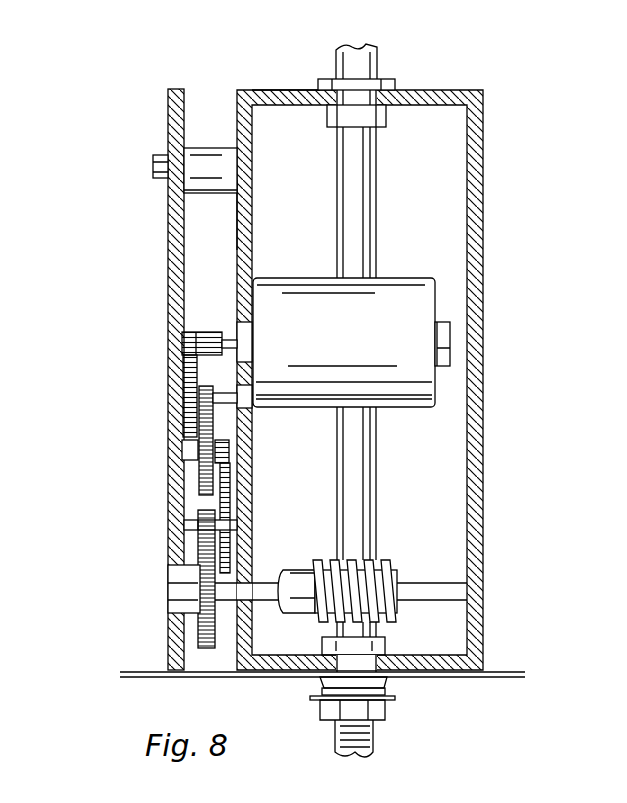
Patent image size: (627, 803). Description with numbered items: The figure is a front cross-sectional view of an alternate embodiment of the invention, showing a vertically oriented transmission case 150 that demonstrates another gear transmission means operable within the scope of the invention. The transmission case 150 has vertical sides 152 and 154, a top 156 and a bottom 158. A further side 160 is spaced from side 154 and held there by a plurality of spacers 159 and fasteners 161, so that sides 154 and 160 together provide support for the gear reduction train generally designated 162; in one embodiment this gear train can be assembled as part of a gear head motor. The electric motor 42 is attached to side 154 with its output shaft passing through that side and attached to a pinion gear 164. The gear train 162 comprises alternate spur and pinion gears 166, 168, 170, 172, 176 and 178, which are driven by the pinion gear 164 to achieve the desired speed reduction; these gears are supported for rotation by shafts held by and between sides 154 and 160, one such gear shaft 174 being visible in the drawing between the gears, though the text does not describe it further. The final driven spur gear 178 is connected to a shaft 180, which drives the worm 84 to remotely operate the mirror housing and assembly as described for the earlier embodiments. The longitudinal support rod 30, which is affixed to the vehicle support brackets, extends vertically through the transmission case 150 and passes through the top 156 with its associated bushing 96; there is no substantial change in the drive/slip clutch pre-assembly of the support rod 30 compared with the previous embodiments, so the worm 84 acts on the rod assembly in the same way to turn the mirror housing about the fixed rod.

The vertically oriented transmission case 150 is at (505, 199).
The vertical side 152 is at (484, 259).
The vertical side 154 is at (247, 215).
The top 156 is at (306, 89).
The bottom 158 is at (410, 660).
The spacer 159 is at (222, 148).
The side 160 is at (172, 115).
The fastener 161 is at (152, 165).
The gear reduction train 162 is at (208, 330).
The pinion gear 164 is at (181, 340).
The spur gear 166 is at (200, 440).
The pinion gear 168 is at (186, 376).
The spur gear 170 is at (213, 412).
The pinion gear 172 is at (240, 462).
The worm shaft 174 is at (232, 505).
The spur gear 176 is at (195, 518).
The driven spur gear 178 is at (205, 633).
The shaft 180 is at (278, 588).
The worm 84 is at (381, 575).
The longitudinal support rod 30 is at (369, 172).
The bushing 96 is at (393, 82).
The electric motor 42 is at (314, 340).